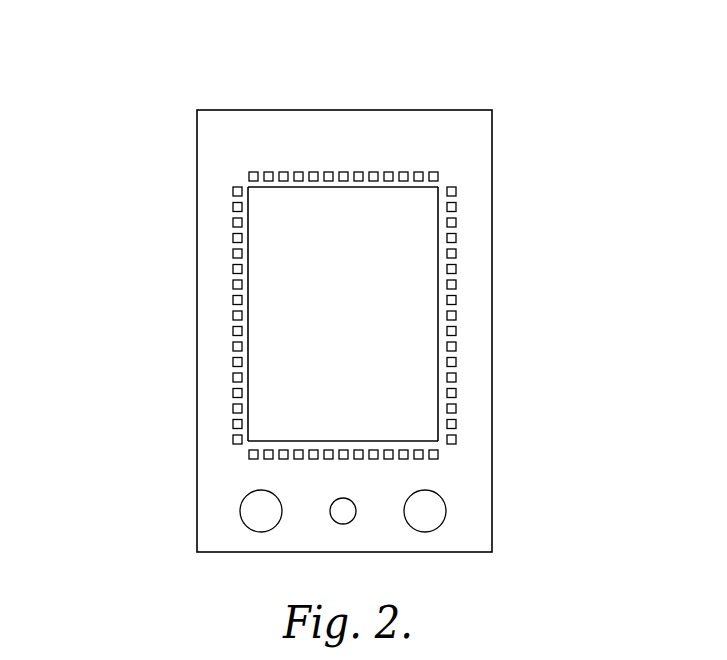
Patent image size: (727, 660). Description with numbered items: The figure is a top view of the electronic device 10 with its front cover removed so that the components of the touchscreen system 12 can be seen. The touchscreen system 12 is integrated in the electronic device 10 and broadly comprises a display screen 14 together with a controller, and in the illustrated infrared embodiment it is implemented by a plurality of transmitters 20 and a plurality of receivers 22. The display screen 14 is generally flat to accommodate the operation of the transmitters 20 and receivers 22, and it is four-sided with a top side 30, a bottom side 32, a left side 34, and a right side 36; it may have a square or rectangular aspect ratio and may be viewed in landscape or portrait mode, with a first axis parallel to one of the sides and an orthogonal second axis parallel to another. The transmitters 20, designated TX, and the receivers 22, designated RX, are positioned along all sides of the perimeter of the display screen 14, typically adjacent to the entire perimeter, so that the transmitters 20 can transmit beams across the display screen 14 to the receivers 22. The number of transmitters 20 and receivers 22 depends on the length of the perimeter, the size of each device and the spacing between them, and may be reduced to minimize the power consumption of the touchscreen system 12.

The electronic device 10 is at (130, 165).
The touchscreen system 12 is at (535, 178).
The display screen 14 is at (361, 313).
The transmitters 20 is at (339, 329).
The receivers 22 is at (344, 155).
The top side 30 is at (407, 187).
The bottom side 32 is at (305, 441).
The left side 34 is at (250, 337).
The right side 36 is at (438, 336).